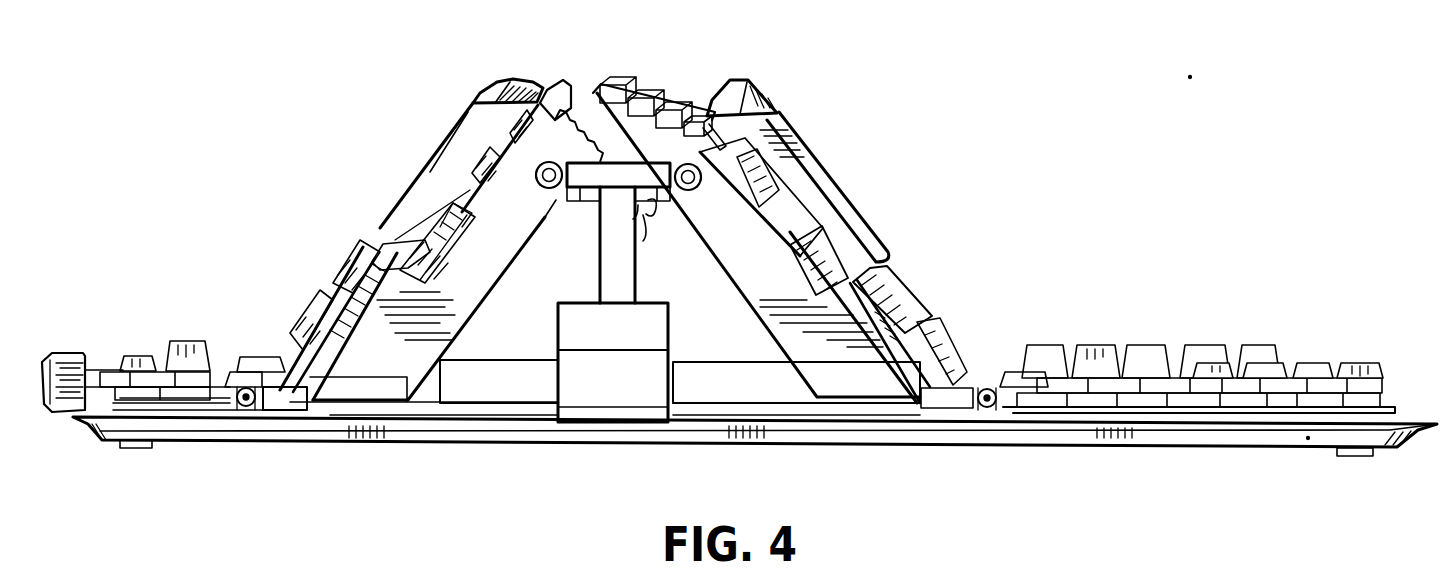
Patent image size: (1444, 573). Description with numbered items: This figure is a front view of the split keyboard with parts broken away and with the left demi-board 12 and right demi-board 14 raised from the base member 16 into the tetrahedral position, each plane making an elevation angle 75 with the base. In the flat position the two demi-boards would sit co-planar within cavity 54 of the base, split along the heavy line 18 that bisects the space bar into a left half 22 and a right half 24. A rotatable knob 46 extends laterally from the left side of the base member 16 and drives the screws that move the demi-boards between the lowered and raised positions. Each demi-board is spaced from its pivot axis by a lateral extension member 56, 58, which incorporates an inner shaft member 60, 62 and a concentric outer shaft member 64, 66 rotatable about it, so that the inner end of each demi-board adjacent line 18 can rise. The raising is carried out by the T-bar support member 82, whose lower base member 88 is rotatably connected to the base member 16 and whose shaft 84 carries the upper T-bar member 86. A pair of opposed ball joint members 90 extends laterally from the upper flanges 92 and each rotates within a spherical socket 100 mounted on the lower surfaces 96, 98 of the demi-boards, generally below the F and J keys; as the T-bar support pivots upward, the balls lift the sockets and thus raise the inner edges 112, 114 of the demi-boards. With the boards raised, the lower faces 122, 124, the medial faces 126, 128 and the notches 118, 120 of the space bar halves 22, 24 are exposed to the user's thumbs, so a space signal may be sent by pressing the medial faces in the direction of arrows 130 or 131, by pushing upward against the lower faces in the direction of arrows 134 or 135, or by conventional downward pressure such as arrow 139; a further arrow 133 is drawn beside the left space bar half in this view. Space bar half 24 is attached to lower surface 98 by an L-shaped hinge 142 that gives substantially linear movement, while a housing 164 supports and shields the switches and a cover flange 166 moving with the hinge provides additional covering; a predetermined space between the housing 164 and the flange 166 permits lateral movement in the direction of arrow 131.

The left demi-board 12 is at (398, 373).
The right demi-board 14 is at (860, 390).
The base member 16 is at (820, 433).
The heavy line 18 is at (611, 97).
The left half of space bar 22 is at (460, 195).
The right half of space bar 24 is at (767, 125).
The rotatable knob 46 is at (63, 410).
The cavity 54 is at (467, 390).
The lateral extension member 56 is at (247, 390).
The lateral extension member 58 is at (977, 387).
The inner shaft member 60 is at (247, 406).
The inner shaft member 62 is at (987, 407).
The outer shaft member 64 is at (257, 417).
The outer shaft member 66 is at (993, 387).
The elevation angle 75 is at (750, 333).
The T-bar support member 82 is at (590, 390).
The shaft 84 is at (640, 276).
The upper T-bar member 86 is at (640, 250).
The lower base member 88 is at (637, 383).
The ball joint member 90 is at (560, 195).
The upper flange 92 is at (655, 192).
The lower surface 96 is at (466, 300).
The lower surface 98 is at (773, 290).
The socket 100 is at (534, 188).
The inner edge 112 is at (568, 82).
The inner edge 114 is at (655, 55).
The notch 118 is at (483, 100).
The notch 120 is at (765, 100).
The lower face 122 is at (370, 222).
The lower face 124 is at (820, 193).
The medial face 126 is at (510, 93).
The medial face 128 is at (735, 95).
The arrow 130 is at (380, 207).
The arrow 131 is at (905, 247).
The motion arrow 133 is at (437, 112).
The arrow 134 is at (410, 134).
The arrow 135 is at (872, 126).
The arrow 139 is at (826, 108).
The L-shaped hinge 142 is at (692, 206).
The housing 164 is at (893, 297).
The cover flange 166 is at (796, 349).